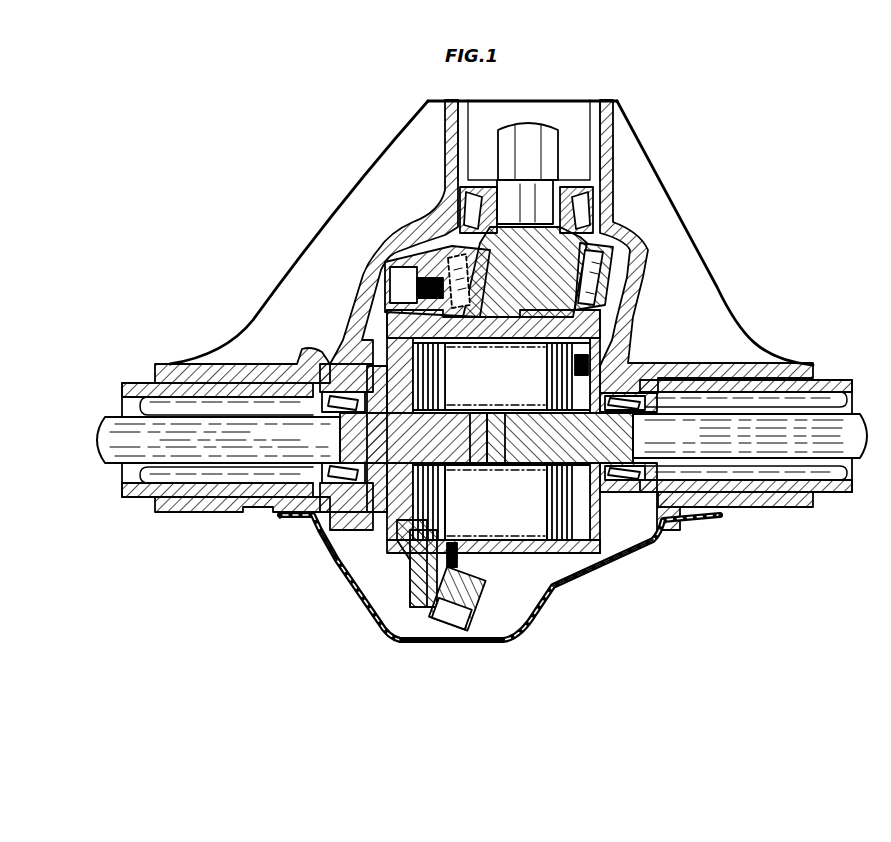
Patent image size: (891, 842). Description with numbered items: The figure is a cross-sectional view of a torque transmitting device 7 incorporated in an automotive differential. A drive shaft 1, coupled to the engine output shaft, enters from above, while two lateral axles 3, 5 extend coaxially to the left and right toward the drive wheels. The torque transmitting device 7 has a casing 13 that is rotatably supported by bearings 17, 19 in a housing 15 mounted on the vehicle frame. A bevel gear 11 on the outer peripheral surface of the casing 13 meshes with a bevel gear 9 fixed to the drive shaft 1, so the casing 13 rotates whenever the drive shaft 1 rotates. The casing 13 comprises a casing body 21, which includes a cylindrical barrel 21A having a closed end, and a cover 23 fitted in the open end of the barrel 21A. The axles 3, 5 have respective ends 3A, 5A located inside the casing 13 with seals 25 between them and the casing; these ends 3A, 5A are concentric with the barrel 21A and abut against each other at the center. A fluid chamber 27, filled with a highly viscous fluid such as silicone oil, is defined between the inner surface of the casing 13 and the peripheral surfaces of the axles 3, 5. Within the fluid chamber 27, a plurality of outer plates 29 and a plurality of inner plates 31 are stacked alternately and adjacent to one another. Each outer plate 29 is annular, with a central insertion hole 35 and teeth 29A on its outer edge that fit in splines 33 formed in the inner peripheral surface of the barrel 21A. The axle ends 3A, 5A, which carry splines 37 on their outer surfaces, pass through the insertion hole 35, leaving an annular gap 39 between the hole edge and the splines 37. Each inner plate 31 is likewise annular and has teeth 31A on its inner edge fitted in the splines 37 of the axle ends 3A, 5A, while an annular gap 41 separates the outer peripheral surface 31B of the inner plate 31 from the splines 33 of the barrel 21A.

The drive shaft 1 is at (552, 140).
The lateral axle 3 is at (140, 398).
The lateral axle 5 is at (826, 418).
The torque transmitting device 7 is at (366, 227).
The bevel gear 9 is at (640, 268).
The bevel gear 11 is at (480, 612).
The casing 13 is at (372, 597).
The housing 15 is at (360, 290).
The bearing 17 is at (335, 548).
The bearing 19 is at (660, 528).
The casing body 21 is at (360, 575).
The cylindrical barrel 21A is at (555, 595).
The cover 23 is at (600, 553).
The seal 25 is at (340, 433).
The fluid chamber 27 is at (528, 523).
The outer plate 29 is at (412, 555).
The teeth 29A is at (436, 612).
The inner plate 31 is at (445, 477).
The teeth 31A is at (486, 438).
The outer peripheral surface 31B is at (478, 522).
The splines 33 is at (490, 556).
The insertion hole 35 is at (372, 525).
The splines 37 is at (505, 398).
The annular gap 39 is at (472, 420).
The annular gap 41 is at (568, 318).
The axle end 3A is at (478, 414).
The axle end 5A is at (522, 414).